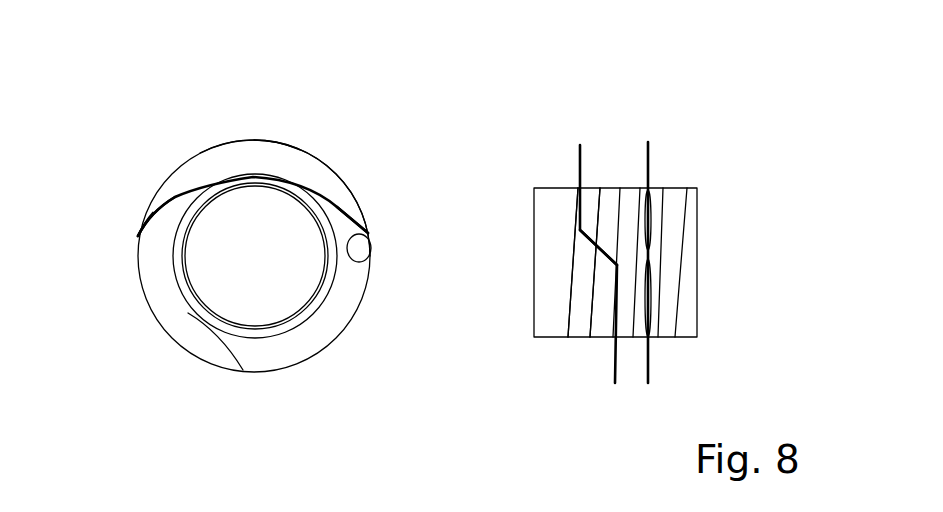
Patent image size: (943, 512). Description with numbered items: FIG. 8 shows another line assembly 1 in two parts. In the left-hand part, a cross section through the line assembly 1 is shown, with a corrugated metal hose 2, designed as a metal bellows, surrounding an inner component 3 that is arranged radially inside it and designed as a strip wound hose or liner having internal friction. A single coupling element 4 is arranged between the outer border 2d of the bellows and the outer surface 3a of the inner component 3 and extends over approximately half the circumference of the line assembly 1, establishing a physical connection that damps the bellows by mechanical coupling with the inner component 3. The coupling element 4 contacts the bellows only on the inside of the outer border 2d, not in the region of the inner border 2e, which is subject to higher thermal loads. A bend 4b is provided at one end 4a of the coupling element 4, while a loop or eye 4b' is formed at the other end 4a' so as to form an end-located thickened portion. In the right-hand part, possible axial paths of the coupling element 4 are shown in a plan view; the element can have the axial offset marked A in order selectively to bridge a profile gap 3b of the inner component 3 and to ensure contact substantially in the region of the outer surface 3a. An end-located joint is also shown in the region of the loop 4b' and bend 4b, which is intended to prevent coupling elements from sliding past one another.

The line assembly 1 is at (367, 160).
The metal hose 2 is at (286, 133).
The outer border 2d is at (236, 141).
The inner border 2e is at (188, 313).
The inner component 3 is at (239, 337).
The outer surface 3a is at (552, 323).
The profile gap 3b is at (590, 320).
The coupling element 4 is at (325, 185).
The end 4a is at (135, 180).
The other end 4a' is at (399, 195).
The bend 4b is at (109, 254).
The loop or eye 4b' is at (580, 270).
The axial offset A is at (593, 262).